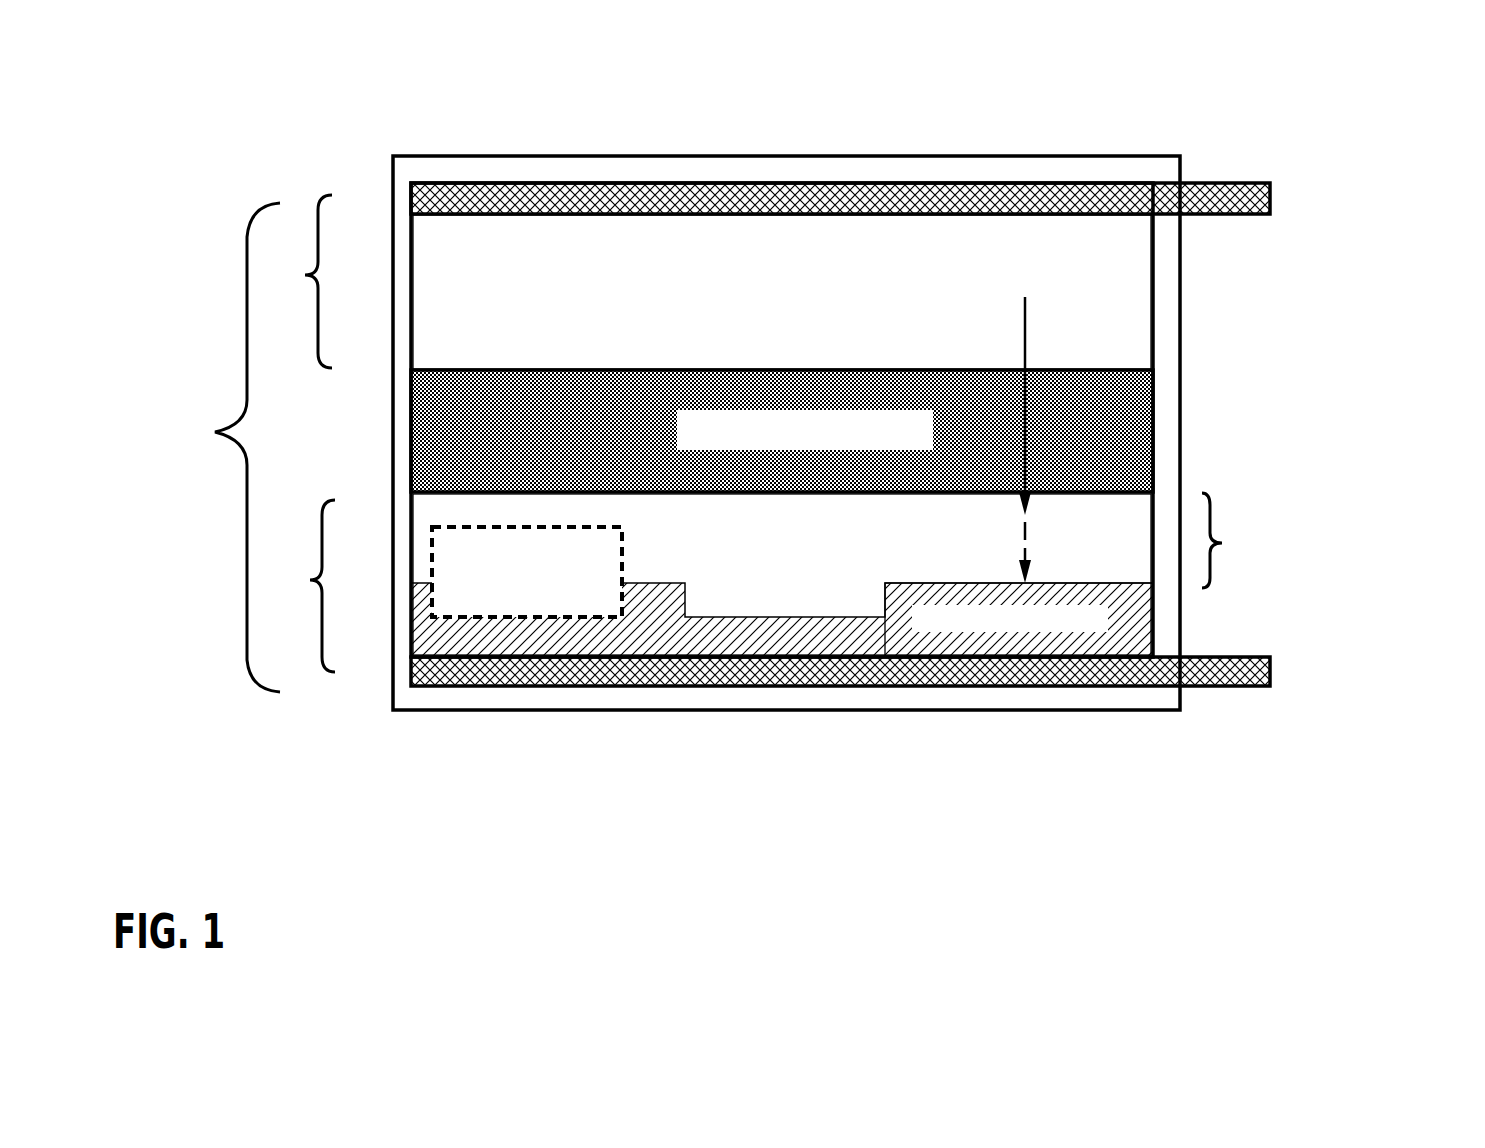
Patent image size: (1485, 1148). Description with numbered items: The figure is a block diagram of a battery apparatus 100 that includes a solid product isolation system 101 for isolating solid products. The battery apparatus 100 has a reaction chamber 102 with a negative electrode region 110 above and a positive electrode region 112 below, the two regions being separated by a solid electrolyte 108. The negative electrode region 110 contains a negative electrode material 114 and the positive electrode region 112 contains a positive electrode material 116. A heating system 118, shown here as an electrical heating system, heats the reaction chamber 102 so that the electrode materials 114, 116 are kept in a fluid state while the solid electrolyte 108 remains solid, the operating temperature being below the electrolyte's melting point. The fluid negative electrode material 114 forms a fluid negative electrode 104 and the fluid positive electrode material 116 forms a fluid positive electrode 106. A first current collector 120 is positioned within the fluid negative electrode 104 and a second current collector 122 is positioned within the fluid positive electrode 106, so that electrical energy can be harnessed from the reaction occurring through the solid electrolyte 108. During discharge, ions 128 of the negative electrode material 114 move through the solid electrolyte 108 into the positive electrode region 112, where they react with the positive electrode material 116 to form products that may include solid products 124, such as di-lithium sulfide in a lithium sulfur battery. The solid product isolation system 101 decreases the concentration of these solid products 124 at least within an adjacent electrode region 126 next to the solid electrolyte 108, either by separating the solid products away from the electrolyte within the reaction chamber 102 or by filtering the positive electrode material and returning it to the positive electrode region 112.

The battery apparatus 100 is at (283, 785).
The solid product isolation system 101 is at (433, 577).
The reaction chamber 102 is at (245, 235).
The fluid negative electrode 104 is at (1155, 277).
The fluid positive electrode 106 is at (410, 520).
The solid electrolyte 108 is at (1155, 430).
The negative electrode region 110 is at (299, 281).
The positive electrode region 112 is at (302, 586).
The negative electrode material 114 is at (694, 236).
The positive electrode material 116 is at (662, 600).
The heating system 118 is at (1181, 467).
The first current collector 120 is at (1223, 183).
The second current collector 122 is at (1240, 687).
The solid products 124 is at (1133, 622).
The adjacent electrode region 126 is at (1222, 498).
The ions 128 is at (1025, 315).